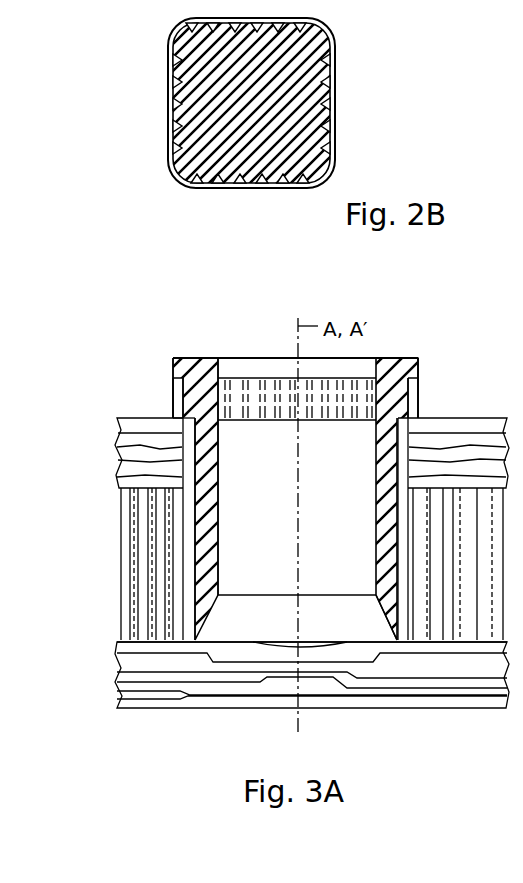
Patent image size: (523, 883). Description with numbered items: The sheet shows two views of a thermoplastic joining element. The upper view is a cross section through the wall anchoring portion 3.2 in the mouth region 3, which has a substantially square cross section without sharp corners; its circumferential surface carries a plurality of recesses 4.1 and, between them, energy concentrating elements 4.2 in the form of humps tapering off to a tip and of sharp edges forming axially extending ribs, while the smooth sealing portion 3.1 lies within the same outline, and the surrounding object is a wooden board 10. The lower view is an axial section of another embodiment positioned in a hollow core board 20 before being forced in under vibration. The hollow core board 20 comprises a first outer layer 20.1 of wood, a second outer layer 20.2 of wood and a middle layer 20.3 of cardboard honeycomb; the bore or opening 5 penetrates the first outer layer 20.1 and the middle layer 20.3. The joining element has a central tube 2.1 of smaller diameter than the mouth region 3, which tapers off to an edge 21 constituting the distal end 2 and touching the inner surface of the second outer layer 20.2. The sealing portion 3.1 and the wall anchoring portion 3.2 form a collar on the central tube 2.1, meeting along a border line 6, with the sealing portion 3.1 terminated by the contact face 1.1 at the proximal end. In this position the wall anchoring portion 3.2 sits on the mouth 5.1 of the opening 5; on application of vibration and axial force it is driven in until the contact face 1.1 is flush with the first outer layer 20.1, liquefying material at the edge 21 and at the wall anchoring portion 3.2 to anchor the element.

In FIG. 3A, the contact face 1.1 is at (396, 355).
In FIG. 3A, the distal end 2 is at (378, 624).
In FIG. 3A, the central tube 2.1 is at (218, 528).
In FIG. 3A, the edge 21 is at (398, 642).
In FIG. 3A, the mouth region 3 is at (160, 380).
In FIG. 2B, the sealing portion 3.1 is at (170, 43).
In FIG. 3A, the sealing portion 3.1 is at (418, 369).
In FIG. 2B, the wall anchoring portion 3.2 is at (195, 95).
In FIG. 3A, the wall anchoring portion 3.2 is at (412, 397).
In FIG. 2B, the recesses 4.1 is at (218, 182).
In FIG. 2B, the energy concentrating elements 4.2 is at (178, 145).
In FIG. 3A, the opening 5 is at (275, 620).
In FIG. 3A, the mouth 5.1 is at (177, 416).
In FIG. 3A, the border line 6 is at (172, 380).
In FIG. 3A, the wooden board 10 is at (114, 615).
In FIG. 3A, the hollow core board 20 is at (312, 602).
In FIG. 3A, the first outer layer 20.1 is at (493, 462).
In FIG. 3A, the second outer layer 20.2 is at (472, 677).
In FIG. 3A, the middle layer 20.3 is at (423, 528).